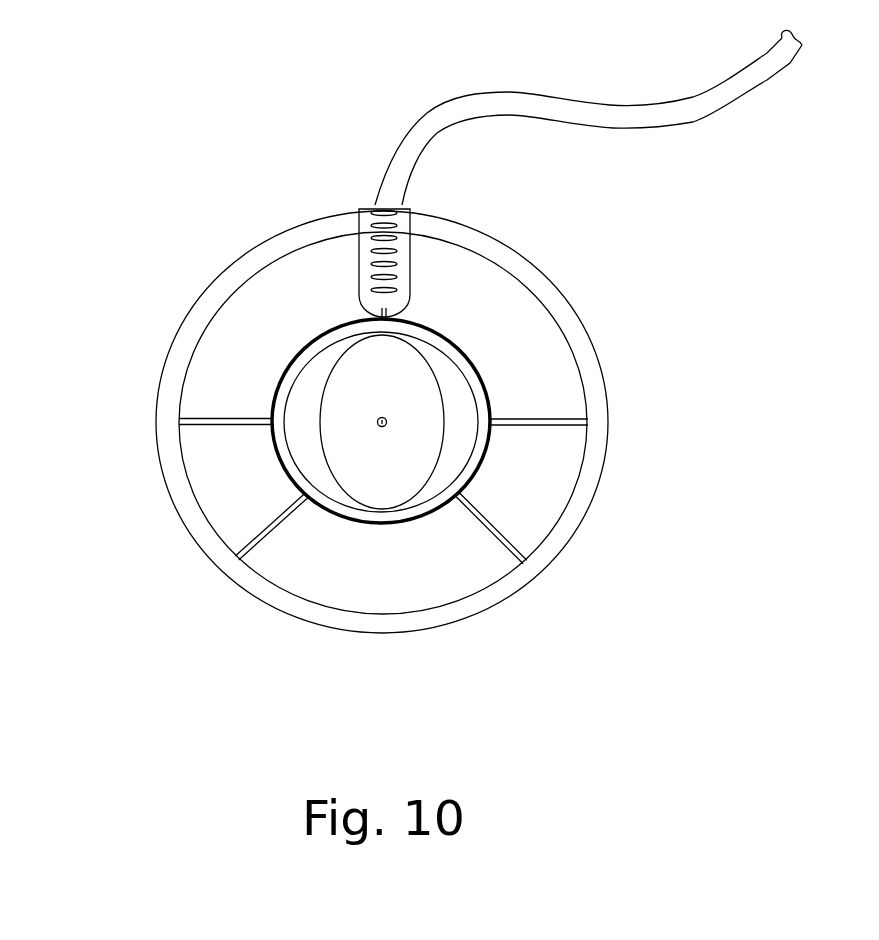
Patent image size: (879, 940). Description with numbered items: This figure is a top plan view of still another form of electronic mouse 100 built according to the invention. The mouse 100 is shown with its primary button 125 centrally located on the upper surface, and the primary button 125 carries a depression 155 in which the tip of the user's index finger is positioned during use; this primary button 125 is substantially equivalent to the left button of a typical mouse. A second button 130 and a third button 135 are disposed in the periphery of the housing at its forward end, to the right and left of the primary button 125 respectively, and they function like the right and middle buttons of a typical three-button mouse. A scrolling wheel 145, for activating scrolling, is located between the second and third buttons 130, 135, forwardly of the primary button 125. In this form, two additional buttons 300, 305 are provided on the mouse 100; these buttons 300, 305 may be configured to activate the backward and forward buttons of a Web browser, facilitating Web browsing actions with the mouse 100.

The electronic mouse 100 is at (178, 293).
The primary button 125 is at (482, 340).
The second button 130 is at (258, 300).
The third button 135 is at (545, 362).
The scrolling wheel 145 is at (360, 225).
The depression 155 is at (368, 370).
The additional button 300 is at (230, 480).
The additional button 305 is at (530, 487).